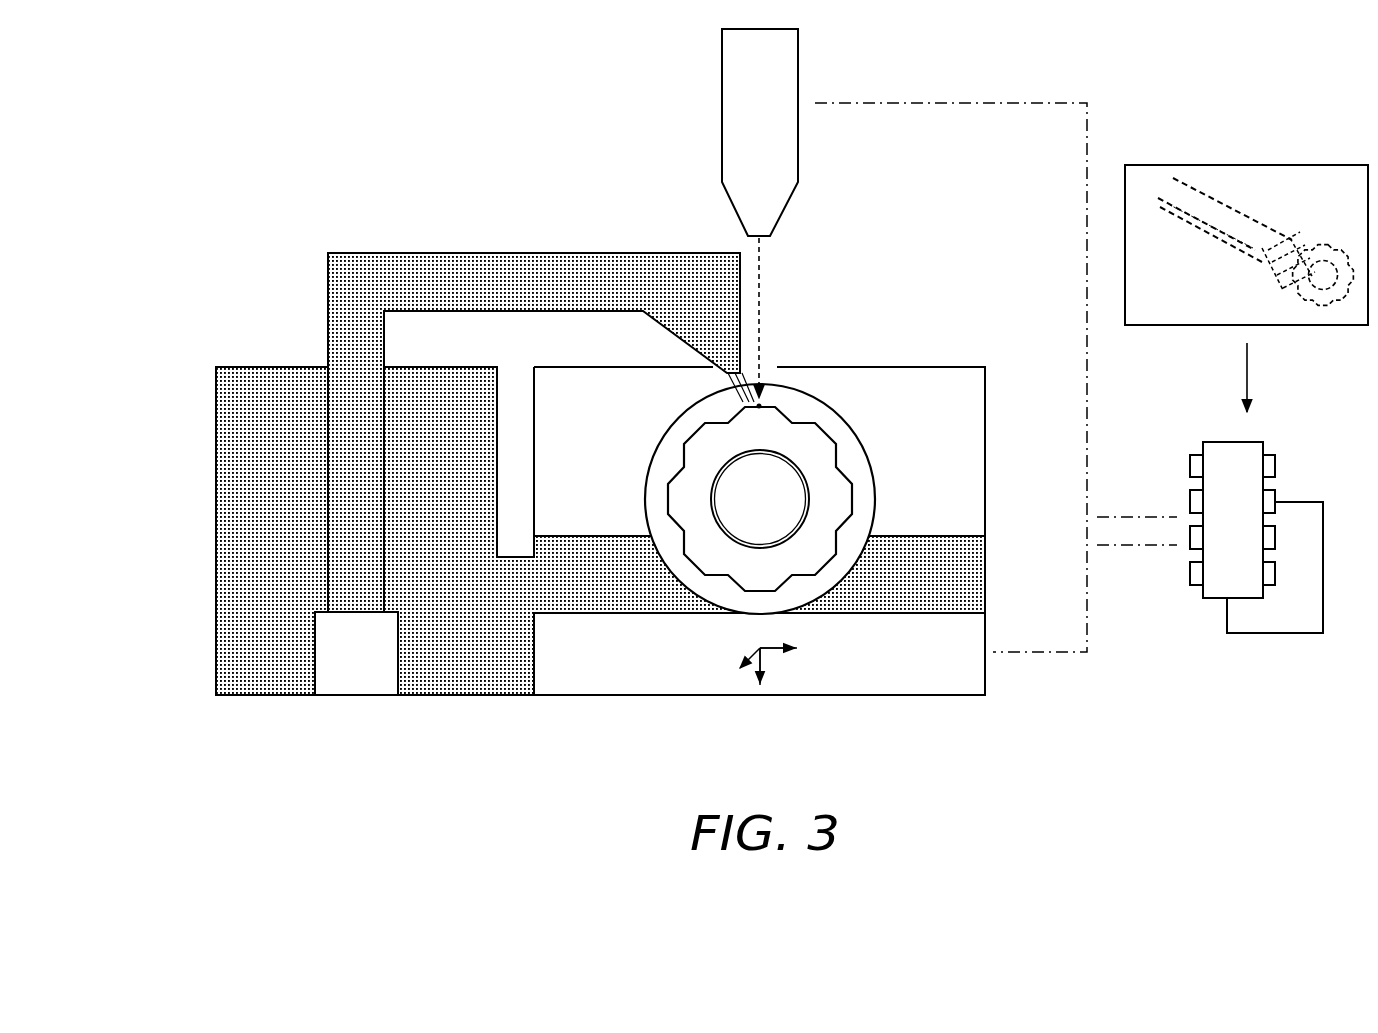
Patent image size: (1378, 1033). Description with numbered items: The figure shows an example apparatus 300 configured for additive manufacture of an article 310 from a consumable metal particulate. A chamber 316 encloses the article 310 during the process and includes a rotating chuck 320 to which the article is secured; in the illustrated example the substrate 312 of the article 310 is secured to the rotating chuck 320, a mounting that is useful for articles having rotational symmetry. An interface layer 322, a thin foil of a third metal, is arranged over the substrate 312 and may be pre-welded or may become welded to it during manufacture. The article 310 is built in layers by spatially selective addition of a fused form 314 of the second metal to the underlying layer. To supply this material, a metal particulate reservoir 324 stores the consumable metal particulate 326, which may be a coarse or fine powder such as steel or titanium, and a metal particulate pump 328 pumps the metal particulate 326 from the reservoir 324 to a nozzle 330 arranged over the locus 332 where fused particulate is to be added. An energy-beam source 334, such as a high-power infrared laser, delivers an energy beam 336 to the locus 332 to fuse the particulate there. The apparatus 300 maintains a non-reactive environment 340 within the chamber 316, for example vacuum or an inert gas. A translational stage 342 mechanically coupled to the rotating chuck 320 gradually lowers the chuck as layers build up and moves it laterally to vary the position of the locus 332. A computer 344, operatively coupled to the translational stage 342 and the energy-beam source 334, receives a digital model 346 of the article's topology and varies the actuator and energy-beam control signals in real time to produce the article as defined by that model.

The apparatus 300 is at (190, 141).
The article 310 is at (850, 458).
The substrate 312 is at (776, 512).
The fused form of the second metal 314 is at (684, 458).
The chamber 316 is at (986, 477).
The rotating chuck 320 is at (876, 480).
The interface layer 322 is at (809, 504).
The metal particulate reservoir 324 is at (216, 522).
The metal particulate 326 is at (460, 592).
The metal particulate pump 328 is at (372, 664).
The nozzle 330 is at (727, 375).
The locus 332 is at (758, 406).
The energy-beam source 334 is at (777, 115).
The energy beam 336 is at (760, 302).
The non-reactive environment 340 is at (573, 395).
The translational stage 342 is at (958, 672).
The computer 344 is at (1197, 620).
The digital model 346 is at (1177, 308).